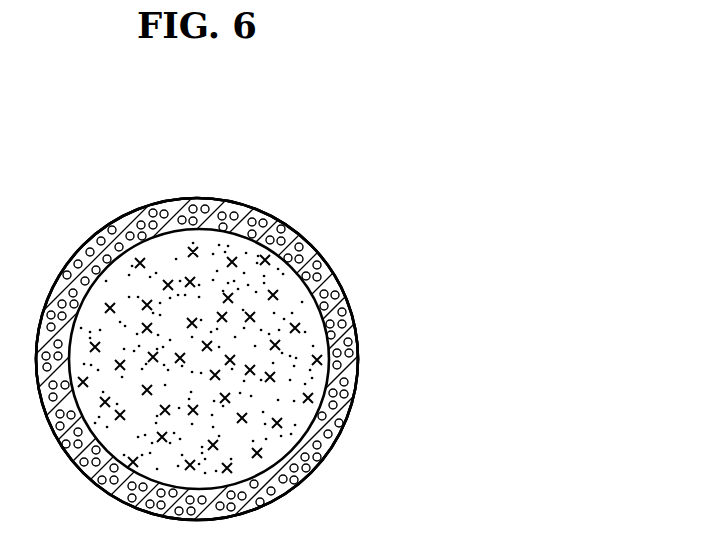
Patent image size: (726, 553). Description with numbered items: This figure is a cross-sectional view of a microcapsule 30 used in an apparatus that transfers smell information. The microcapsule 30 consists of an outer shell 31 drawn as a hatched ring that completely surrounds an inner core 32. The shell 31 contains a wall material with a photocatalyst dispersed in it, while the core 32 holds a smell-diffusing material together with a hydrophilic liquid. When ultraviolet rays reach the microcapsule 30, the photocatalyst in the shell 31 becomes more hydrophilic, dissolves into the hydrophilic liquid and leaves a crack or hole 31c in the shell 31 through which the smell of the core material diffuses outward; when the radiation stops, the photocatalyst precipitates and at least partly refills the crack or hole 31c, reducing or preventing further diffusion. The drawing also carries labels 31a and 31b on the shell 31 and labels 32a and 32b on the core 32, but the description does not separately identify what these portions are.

The microcapsule 30 is at (365, 232).
The shell 31 is at (298, 355).
The first coating layer 31a is at (345, 372).
The second coating layer 31b is at (353, 306).
The crack or hole 31c is at (353, 306).
The core 32 is at (275, 369).
The core active material 32a is at (282, 390).
The core additive particles 32b is at (278, 425).